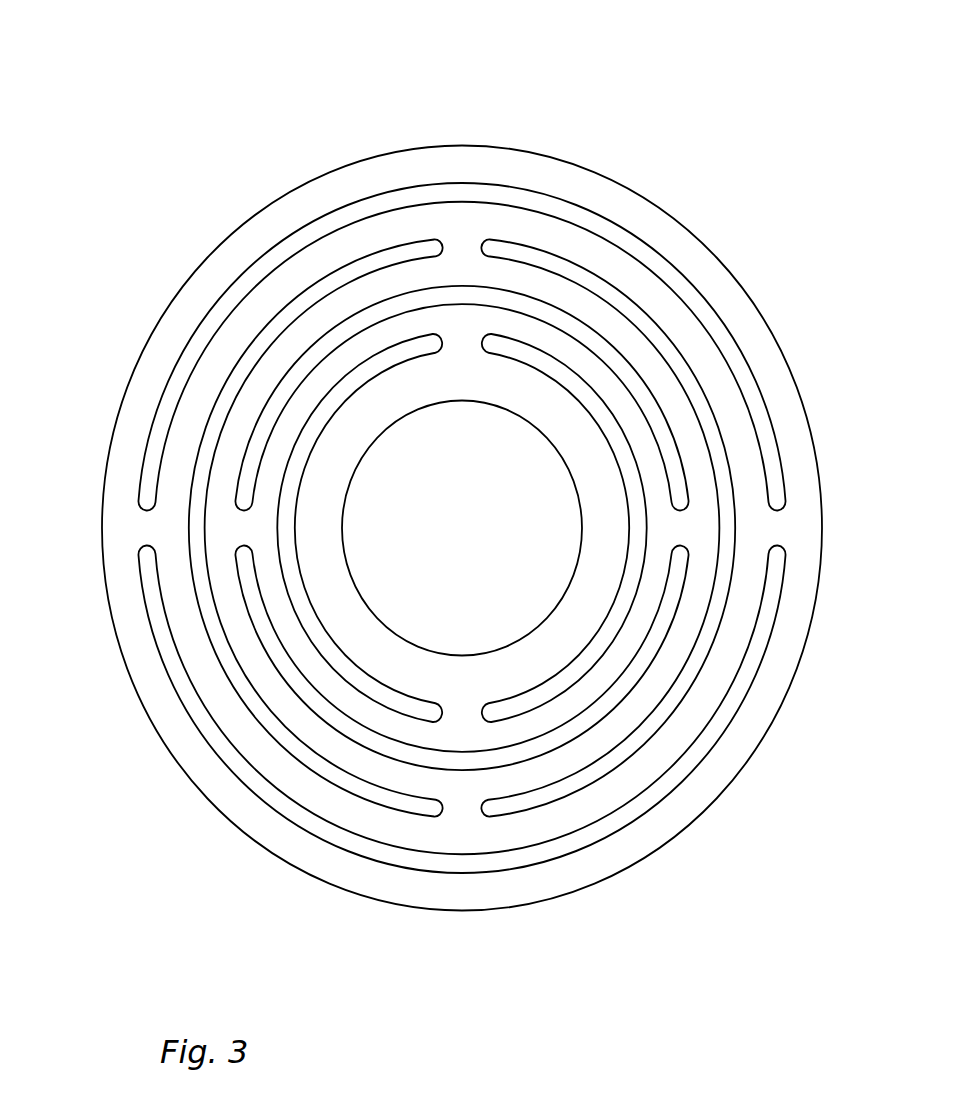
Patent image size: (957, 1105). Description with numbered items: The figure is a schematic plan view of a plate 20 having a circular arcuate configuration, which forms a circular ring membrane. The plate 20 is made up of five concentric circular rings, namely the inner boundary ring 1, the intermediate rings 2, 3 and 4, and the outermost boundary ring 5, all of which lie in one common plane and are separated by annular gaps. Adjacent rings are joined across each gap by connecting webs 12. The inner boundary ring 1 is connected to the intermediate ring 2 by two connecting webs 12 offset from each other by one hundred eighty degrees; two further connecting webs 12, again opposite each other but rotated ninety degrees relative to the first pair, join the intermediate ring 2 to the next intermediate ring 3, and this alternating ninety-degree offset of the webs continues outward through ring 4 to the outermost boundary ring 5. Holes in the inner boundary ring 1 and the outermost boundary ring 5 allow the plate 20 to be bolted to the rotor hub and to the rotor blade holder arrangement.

The plate 20 is at (600, 107).
The outermost boundary ring 5 is at (666, 223).
The intermediate ring 4 is at (462, 520).
The intermediate ring 3 is at (461, 516).
The intermediate ring 2 is at (461, 511).
The inner boundary ring 1 is at (362, 443).
The connecting webs 12 is at (460, 240).